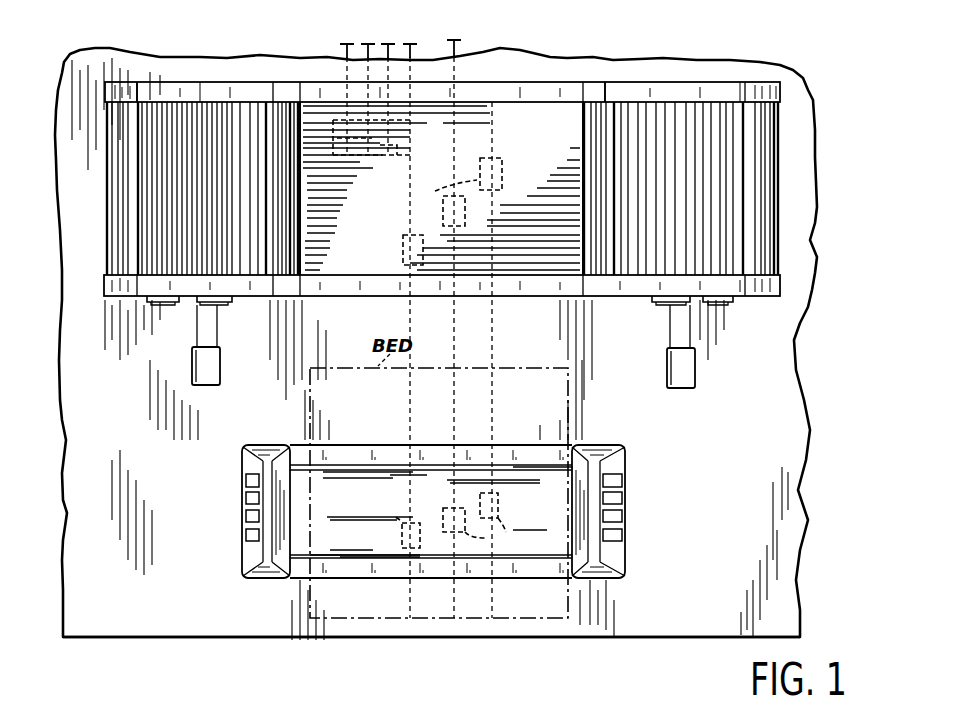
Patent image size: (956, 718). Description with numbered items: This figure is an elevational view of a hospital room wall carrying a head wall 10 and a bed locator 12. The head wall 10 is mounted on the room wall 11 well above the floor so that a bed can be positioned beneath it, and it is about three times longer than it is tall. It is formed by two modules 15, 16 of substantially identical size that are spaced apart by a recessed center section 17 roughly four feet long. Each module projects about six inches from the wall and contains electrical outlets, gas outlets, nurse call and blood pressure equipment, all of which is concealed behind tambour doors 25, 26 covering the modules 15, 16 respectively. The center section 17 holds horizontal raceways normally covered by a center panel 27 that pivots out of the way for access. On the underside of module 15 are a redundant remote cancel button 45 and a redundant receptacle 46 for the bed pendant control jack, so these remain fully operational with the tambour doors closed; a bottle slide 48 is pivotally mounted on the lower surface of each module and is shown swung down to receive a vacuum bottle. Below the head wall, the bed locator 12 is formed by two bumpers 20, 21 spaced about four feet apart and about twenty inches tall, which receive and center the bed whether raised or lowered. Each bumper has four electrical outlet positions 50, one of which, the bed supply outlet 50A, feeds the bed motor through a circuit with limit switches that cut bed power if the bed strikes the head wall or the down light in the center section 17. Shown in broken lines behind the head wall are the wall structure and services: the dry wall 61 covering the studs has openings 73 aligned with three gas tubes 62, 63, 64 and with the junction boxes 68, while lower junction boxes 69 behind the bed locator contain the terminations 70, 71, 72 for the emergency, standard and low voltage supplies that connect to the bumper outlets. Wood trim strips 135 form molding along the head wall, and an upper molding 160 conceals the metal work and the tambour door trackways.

The head wall 10 is at (660, 62).
The room wall 11 is at (811, 432).
The bed locator 12 is at (206, 606).
The module 15 is at (198, 74).
The module 16 is at (727, 83).
The center section 17 is at (520, 102).
The bumper 20 is at (265, 445).
The bumper 21 is at (610, 448).
The tambour door 25 is at (290, 106).
The tambour door 26 is at (650, 126).
The center panel 27 is at (518, 159).
The redundant remote cancel button 45 is at (160, 305).
The redundant receptacle 46 is at (224, 304).
The bottle slide 48 is at (194, 387).
The electrical outlet positions 50 is at (245, 522).
The bed supply outlet 50A is at (622, 540).
The dry wall 61 is at (743, 539).
The tube 62 is at (348, 52).
The tube 63 is at (388, 52).
The tube 64 is at (368, 48).
The junction boxes 68 is at (412, 233).
The junction boxes 69 is at (405, 515).
The termination 70 is at (505, 504).
The termination 71 is at (440, 516).
The termination 72 is at (396, 535).
The openings 73 is at (418, 153).
The wood trim strips 135 is at (256, 298).
The upper molding 160 is at (169, 78).